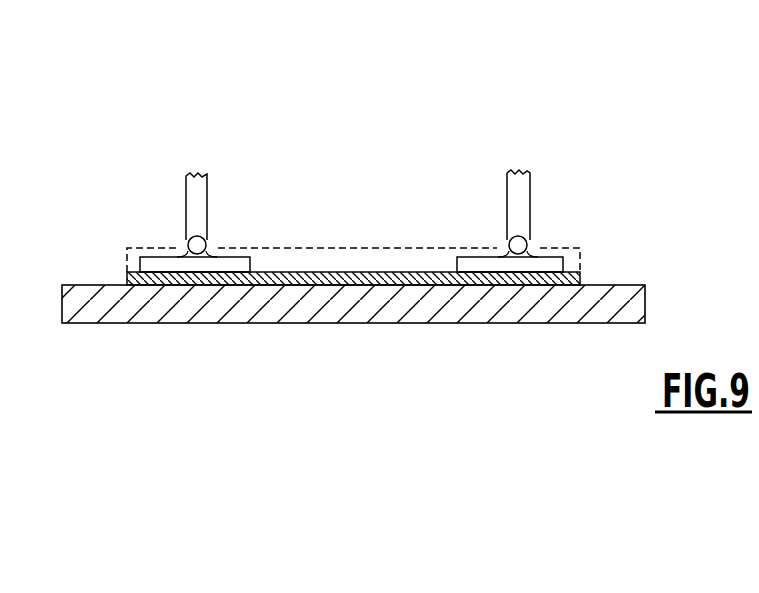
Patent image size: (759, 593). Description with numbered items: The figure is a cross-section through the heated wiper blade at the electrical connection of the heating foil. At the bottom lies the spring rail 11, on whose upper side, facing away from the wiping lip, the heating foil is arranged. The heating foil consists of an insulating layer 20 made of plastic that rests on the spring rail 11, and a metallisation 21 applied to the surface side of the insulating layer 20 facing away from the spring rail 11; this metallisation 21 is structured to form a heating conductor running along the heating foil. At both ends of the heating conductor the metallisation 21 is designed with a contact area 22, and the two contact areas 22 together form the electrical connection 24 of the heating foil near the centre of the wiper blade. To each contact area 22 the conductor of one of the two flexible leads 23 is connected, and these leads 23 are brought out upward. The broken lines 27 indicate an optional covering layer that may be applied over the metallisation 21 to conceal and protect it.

The spring rail 11 is at (353, 327).
The insulating layer 20 is at (353, 202).
The metallisation 21 is at (336, 362).
The contact area 22 is at (378, 314).
The flexible leads 23 is at (197, 193).
The electrical connection 24 is at (542, 137).
The broken lines 27 is at (353, 195).